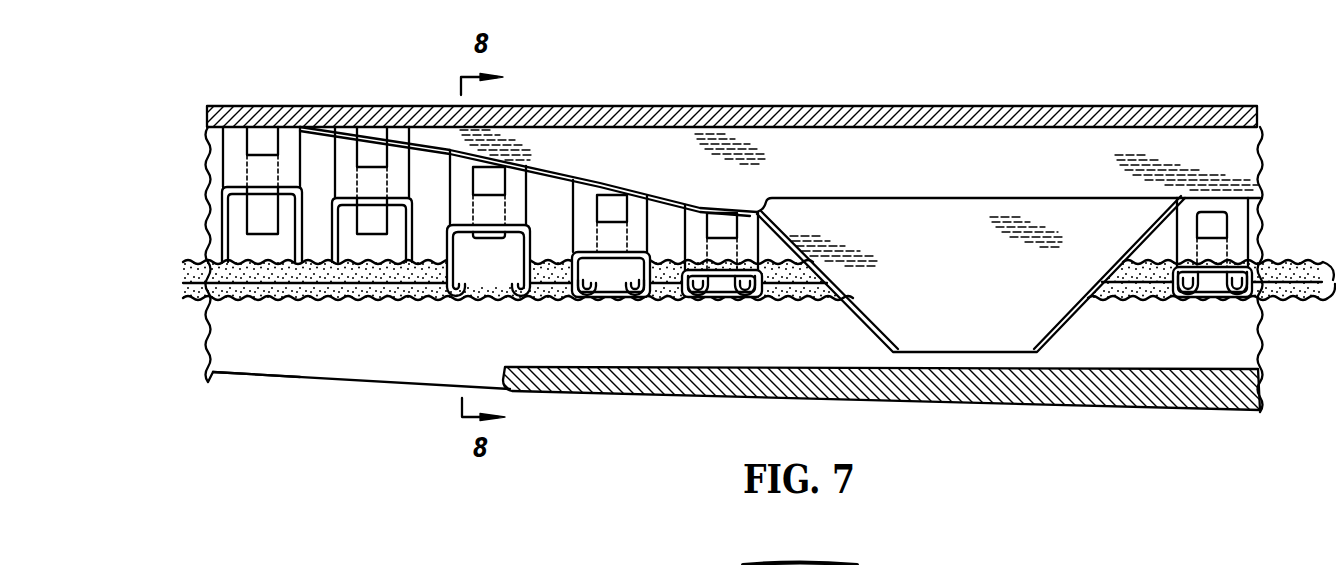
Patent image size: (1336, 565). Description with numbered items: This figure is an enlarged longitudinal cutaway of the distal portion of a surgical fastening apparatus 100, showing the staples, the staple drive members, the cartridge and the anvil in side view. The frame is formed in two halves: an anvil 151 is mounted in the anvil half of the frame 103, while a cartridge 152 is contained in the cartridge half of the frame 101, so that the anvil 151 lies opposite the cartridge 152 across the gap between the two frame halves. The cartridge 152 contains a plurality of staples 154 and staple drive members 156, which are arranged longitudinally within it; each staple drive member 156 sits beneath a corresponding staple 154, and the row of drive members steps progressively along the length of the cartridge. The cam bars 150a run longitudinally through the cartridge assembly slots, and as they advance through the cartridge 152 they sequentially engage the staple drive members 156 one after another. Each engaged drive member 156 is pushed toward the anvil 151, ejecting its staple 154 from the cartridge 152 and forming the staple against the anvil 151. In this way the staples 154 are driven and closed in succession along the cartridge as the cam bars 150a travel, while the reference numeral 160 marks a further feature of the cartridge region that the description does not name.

The panel assembly 100 is at (1072, 82).
The upper skin 101 is at (842, 106).
The lower skin 103 is at (297, 372).
The tapered web member 150a is at (562, 106).
The lower wall 151 is at (243, 304).
The channel housing 152 is at (197, 207).
The foam adhesive layer 154 is at (222, 247).
The rib member 156 is at (237, 140).
The gap between housings 160 is at (317, 152).